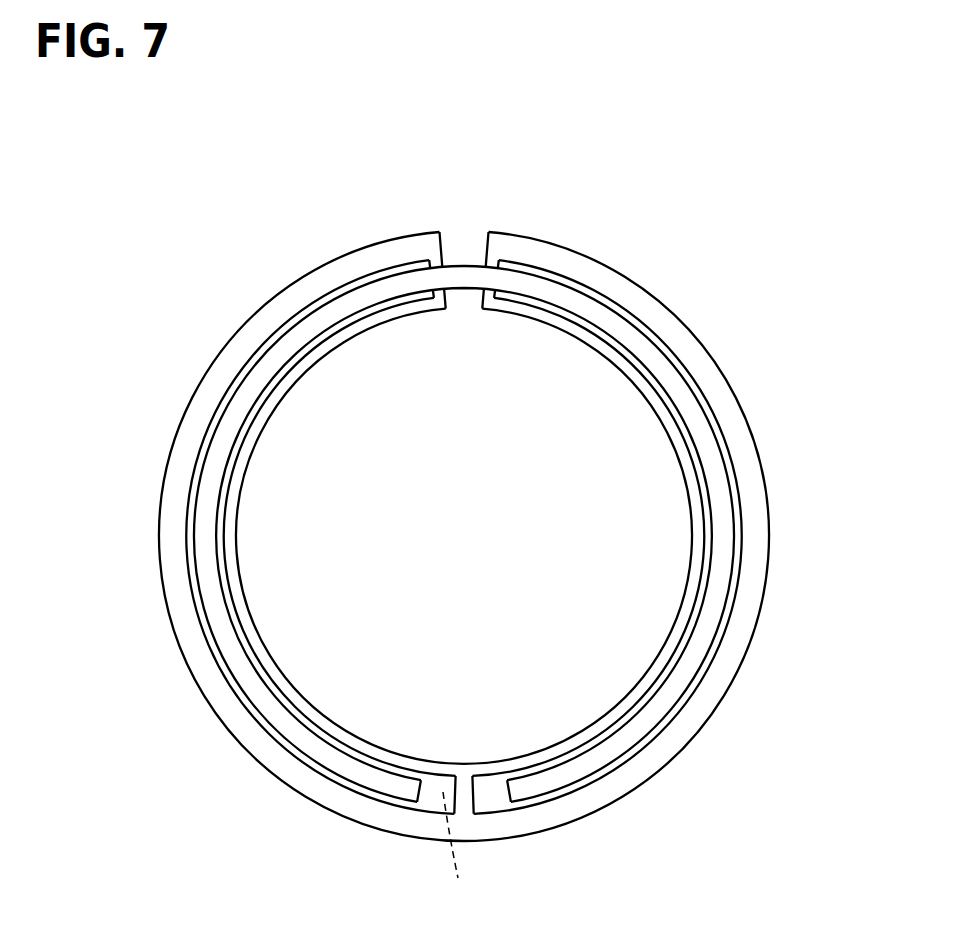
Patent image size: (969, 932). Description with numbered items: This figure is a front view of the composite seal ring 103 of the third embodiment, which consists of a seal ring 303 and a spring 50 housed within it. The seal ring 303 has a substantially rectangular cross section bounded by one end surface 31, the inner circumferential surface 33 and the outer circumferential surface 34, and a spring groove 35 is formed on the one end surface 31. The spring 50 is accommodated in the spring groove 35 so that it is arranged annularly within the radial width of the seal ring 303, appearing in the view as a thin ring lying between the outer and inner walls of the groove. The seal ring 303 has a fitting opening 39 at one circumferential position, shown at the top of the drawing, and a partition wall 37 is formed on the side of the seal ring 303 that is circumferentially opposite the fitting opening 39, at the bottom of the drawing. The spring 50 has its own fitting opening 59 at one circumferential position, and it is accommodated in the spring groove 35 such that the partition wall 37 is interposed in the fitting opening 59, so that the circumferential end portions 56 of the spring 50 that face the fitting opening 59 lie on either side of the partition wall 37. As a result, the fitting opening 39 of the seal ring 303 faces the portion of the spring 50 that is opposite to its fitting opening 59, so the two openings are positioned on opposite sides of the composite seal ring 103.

The composite seal ring 103 is at (800, 263).
The seal ring 303 is at (716, 330).
The one end surface 31 is at (206, 683).
The inner circumferential surface 33 is at (242, 563).
The outer circumferential surface 34 is at (161, 578).
The spring groove 35 is at (716, 626).
The partition wall 37 is at (463, 792).
The fitting opening 39 is at (457, 242).
The spring 50 is at (692, 422).
The circumferential end portion 56 is at (406, 790).
The fitting opening 59 is at (455, 853).